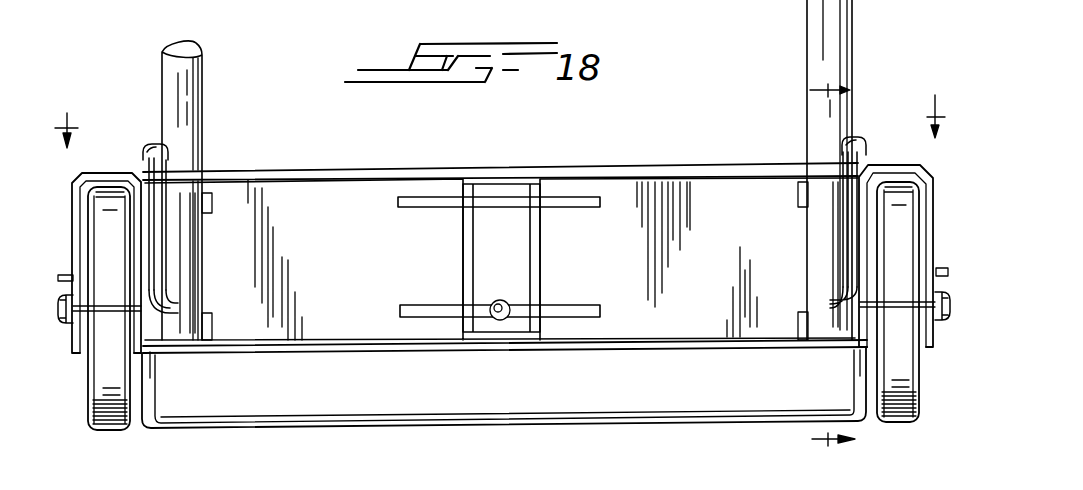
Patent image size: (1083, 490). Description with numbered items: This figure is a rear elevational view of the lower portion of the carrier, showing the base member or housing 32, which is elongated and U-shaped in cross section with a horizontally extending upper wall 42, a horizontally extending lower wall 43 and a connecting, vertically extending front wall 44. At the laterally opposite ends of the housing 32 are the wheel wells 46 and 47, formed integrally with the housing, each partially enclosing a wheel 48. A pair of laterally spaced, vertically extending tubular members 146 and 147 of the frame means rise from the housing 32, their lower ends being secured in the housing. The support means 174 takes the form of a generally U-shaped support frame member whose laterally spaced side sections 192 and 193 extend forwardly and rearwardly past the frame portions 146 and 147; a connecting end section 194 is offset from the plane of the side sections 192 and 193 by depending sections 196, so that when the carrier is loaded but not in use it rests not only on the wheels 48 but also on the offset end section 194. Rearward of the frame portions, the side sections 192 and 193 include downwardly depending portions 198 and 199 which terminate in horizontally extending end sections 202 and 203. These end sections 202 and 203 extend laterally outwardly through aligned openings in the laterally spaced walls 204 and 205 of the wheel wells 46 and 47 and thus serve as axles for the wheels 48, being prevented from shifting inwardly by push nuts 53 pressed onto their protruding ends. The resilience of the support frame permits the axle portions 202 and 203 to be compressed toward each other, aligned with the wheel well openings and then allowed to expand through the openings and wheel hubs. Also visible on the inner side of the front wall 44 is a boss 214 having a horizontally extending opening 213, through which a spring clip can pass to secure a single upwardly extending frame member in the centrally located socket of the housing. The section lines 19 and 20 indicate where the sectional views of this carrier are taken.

The support means 174 is at (268, 5).
The tubular member 147 is at (810, 23).
The section line 19- 19 is at (828, 266).
The side section 193 is at (868, 140).
The section line 20- 20 is at (498, 119).
The wheel well 46 is at (893, 165).
The wheel well 47 is at (107, 173).
The side section 192 is at (147, 148).
The tubular member 146 is at (190, 110).
The upper wall 42 is at (330, 170).
The housing 32 is at (663, 166).
The wall 205 is at (78, 242).
The push nut 53 is at (60, 292).
The depending portion 198 is at (160, 231).
The wall 204 is at (147, 257).
The front wall 44 is at (364, 275).
The opening 213 is at (494, 303).
The boss 214 is at (512, 282).
The depending portion 199 is at (847, 213).
The end section 202 is at (61, 325).
The wheel 48 is at (100, 395).
The depending section 196 is at (154, 377).
The lower wall 43 is at (363, 355).
The end section 194 is at (544, 416).
The end section 203 is at (942, 312).